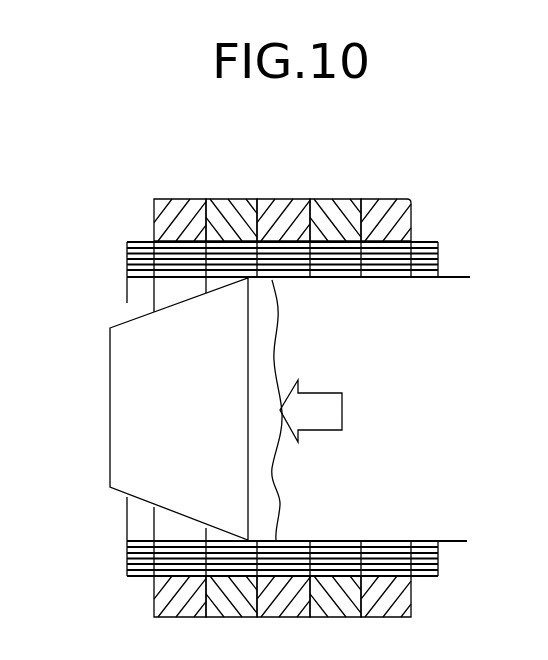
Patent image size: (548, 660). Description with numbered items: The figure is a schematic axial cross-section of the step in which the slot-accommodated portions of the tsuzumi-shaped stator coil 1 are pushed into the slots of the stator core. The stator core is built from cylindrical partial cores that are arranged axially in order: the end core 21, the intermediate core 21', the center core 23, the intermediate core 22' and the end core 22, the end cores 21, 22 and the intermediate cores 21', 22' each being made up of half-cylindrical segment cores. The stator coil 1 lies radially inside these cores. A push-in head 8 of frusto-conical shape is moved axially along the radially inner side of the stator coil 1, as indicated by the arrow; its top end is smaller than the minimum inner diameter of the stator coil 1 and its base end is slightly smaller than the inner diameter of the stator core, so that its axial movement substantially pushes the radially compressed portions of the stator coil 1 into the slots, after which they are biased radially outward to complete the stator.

The stator coil 1 is at (438, 257).
The push-in head 8 is at (130, 405).
The end core 21 is at (172, 376).
The intermediate core 21' is at (231, 377).
The end core 22 is at (398, 376).
The intermediate core 22' is at (336, 377).
The center core 23 is at (282, 203).